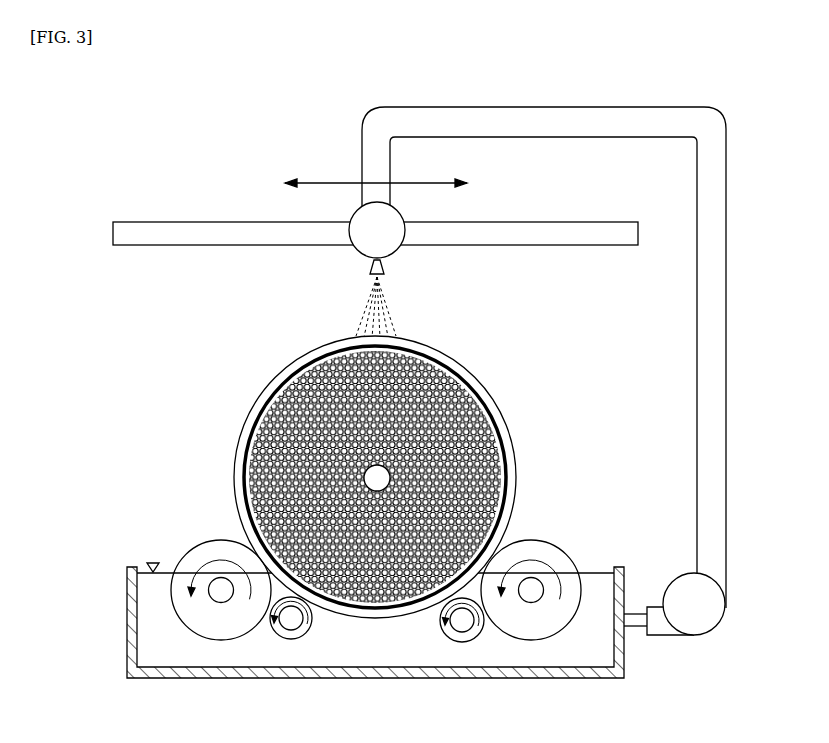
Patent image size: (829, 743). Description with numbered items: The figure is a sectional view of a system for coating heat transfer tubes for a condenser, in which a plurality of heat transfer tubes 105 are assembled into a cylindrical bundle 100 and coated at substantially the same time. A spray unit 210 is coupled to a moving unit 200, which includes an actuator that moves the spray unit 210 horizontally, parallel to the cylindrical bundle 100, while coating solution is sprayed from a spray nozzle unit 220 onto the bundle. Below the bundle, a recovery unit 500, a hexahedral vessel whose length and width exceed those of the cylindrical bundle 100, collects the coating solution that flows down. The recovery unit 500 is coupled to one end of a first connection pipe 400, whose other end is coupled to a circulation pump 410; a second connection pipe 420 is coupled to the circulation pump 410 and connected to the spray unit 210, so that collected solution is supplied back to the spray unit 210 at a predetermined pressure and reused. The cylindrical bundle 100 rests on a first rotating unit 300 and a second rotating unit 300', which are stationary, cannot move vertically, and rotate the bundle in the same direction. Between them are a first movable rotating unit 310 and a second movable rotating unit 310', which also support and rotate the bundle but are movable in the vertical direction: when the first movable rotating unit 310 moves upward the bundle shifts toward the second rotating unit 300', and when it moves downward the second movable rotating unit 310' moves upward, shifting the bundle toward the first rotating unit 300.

The cylindrical bundle 100 is at (491, 395).
The heat transfer tubes 105 is at (297, 380).
The moving unit 200 is at (210, 221).
The spray unit 210 is at (360, 254).
The spray nozzle units 220 is at (385, 268).
The first rotating unit 300 is at (536, 561).
The second rotating unit 300' is at (219, 561).
The first movable rotating unit 310 is at (462, 659).
The second movable rotating unit 310' is at (295, 659).
The first connection pipe 400 is at (633, 627).
The circulation pump 410 is at (712, 612).
The second connection pipe 420 is at (724, 458).
The recovery unit 500 is at (127, 607).